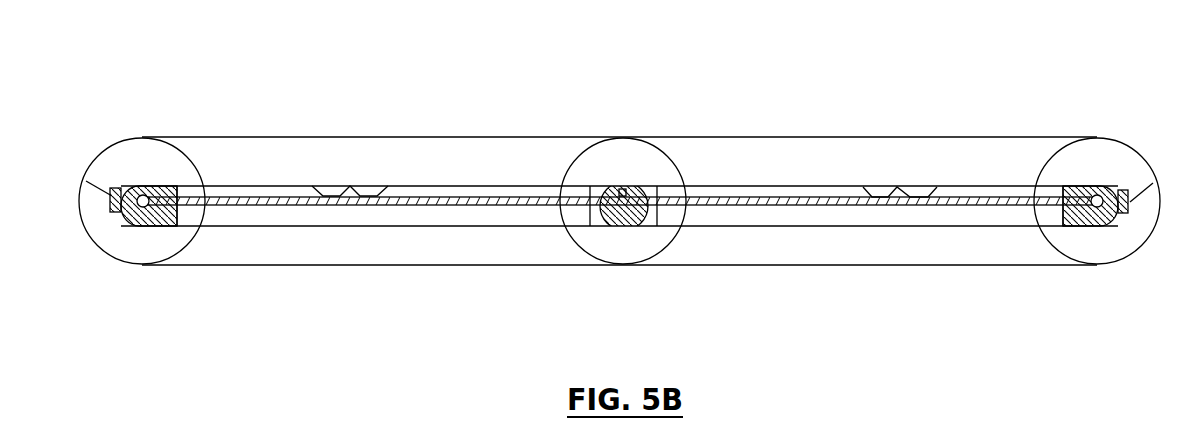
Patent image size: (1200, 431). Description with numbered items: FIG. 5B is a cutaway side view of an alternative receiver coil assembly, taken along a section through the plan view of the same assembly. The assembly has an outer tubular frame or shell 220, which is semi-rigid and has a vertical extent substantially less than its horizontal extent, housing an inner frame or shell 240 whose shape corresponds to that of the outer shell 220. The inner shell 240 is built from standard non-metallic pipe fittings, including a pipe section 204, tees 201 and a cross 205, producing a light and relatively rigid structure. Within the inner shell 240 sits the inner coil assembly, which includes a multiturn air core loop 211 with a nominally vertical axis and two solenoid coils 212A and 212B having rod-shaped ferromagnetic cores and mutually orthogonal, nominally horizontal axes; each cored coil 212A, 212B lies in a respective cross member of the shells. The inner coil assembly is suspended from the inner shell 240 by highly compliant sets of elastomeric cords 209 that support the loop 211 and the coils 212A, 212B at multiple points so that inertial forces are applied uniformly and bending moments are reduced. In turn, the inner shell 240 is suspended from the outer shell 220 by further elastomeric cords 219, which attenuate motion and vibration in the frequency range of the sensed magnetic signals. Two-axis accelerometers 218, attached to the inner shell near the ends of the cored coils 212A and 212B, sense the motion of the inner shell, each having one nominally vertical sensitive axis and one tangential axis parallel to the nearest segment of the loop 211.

The tee 201 is at (138, 186).
The pipe section 204 is at (833, 187).
The cross 205 is at (640, 186).
The elastomeric cords 209 is at (342, 188).
The multiturn air core loop 211 is at (153, 185).
The solenoid coil 212A is at (413, 198).
The solenoid coil 212B is at (622, 189).
The two axis accelerometer 218 is at (98, 185).
The elastomeric cords 219 is at (1153, 183).
The outer tubular shell 220 is at (743, 137).
The inner shell 240 is at (150, 227).